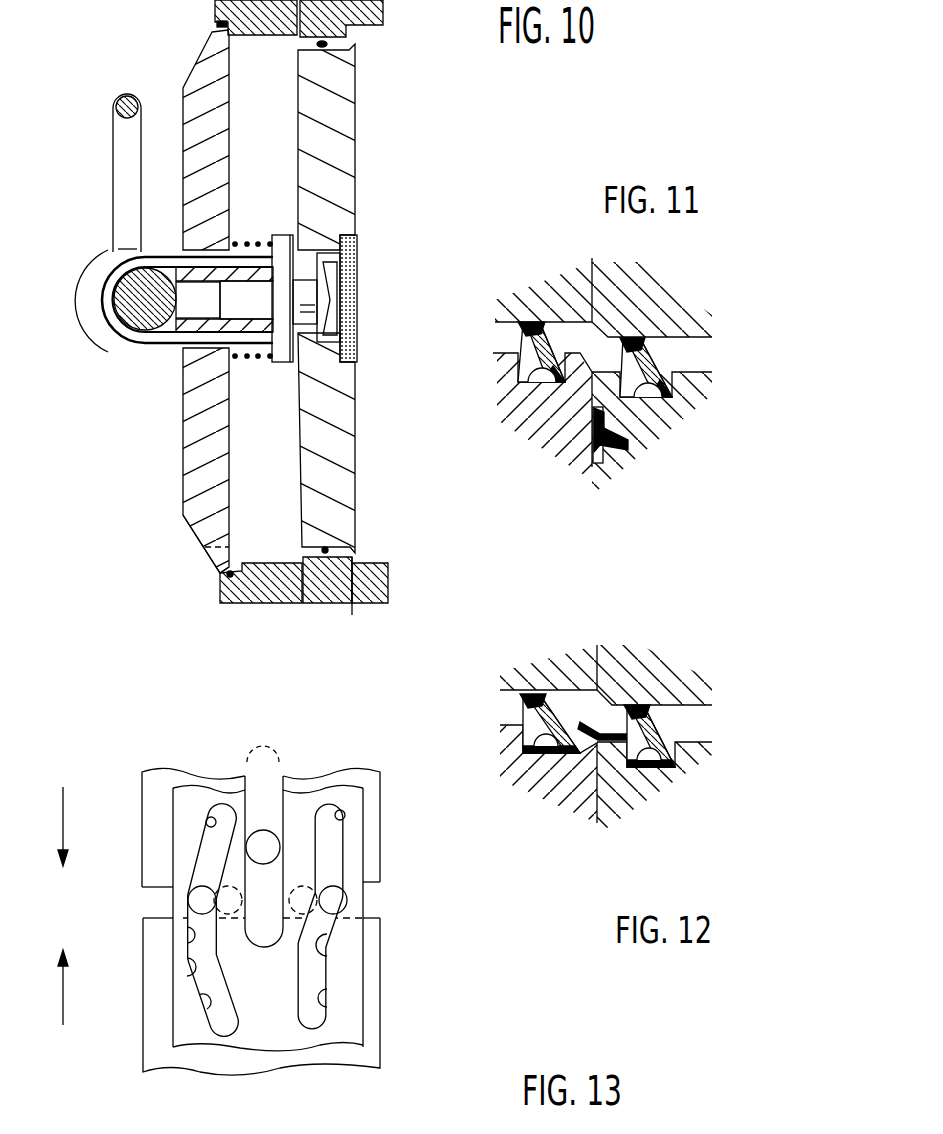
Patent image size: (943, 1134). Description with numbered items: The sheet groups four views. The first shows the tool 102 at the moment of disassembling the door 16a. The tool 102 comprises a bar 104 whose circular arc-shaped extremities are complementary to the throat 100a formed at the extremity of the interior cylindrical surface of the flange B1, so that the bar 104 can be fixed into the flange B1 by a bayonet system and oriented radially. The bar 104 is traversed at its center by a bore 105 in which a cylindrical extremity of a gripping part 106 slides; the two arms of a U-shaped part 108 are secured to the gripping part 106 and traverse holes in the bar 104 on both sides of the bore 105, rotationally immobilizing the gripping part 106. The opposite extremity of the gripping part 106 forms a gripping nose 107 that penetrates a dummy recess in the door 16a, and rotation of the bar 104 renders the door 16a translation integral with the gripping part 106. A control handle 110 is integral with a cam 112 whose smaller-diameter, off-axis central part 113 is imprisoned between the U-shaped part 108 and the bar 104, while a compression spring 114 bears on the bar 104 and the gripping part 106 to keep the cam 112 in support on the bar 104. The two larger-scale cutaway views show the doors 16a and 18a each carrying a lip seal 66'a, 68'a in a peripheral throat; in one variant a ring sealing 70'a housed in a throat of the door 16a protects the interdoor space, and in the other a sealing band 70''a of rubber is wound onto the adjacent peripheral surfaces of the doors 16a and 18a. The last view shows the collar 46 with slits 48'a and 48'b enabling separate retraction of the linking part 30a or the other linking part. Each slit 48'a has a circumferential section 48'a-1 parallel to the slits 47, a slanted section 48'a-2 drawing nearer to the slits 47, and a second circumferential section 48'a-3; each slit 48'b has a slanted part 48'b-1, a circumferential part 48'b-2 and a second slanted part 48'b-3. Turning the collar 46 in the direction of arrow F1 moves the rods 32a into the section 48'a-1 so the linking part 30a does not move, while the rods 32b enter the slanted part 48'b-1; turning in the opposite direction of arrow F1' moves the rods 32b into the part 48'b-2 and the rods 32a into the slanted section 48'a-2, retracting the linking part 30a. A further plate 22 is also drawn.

In FIG. 10, the flange B1 is at (213, 6).
In FIG. 11, the flange B1 is at (530, 289).
In FIG. 12, the flange B1 is at (529, 646).
In FIG. 10, the linking part 30a is at (347, 13).
In FIG. 11, the linking part 30a is at (737, 309).
In FIG. 12, the linking part 30a is at (722, 666).
In FIG. 10, the door 16a is at (342, 145).
In FIG. 11, the door 16a is at (727, 489).
In FIG. 12, the door 16a is at (724, 836).
In FIG. 11, the door 18a is at (562, 489).
In FIG. 12, the door 18a is at (562, 829).
In FIG. 10, the bar 104 is at (200, 407).
In FIG. 10, the gripping part 106 is at (213, 27).
In FIG. 10, the control handle 110 is at (118, 126).
In FIG. 10, the cam 112 is at (110, 250).
In FIG. 10, the central part of the cam 113 is at (121, 299).
In FIG. 10, the compression spring 114 is at (258, 242).
In FIG. 10, the gripping nose 107 is at (327, 292).
In FIG. 10, the U-shaped part 108 is at (127, 337).
In FIG. 10, the bore 105 is at (197, 312).
In FIG. 10, the tool 102 is at (163, 489).
In FIG. 10, the throat 100a is at (227, 567).
In FIG. 11, the lip seal 66'a is at (647, 326).
In FIG. 12, the lip seal 66'a is at (640, 792).
In FIG. 11, the lip seal 68'a is at (517, 379).
In FIG. 12, the lip seal 68'a is at (506, 720).
In FIG. 11, the ring sealing 70'a is at (657, 467).
In FIG. 12, the sealing band 70''a is at (605, 674).
In FIG. 13, the collar 46 is at (203, 797).
In FIG. 13, the slits 47 is at (277, 768).
In FIG. 13, the lower plate 22 is at (157, 968).
In FIG. 13, the slits 48'b is at (155, 931).
In FIG. 13, the slits 48'a is at (383, 916).
In FIG. 13, the rods 32b is at (194, 898).
In FIG. 13, the rods 32a is at (340, 905).
In FIG. 13, the slanted part 48'b-1 is at (149, 786).
In FIG. 13, the circumferential section 48'a-1 is at (382, 781).
In FIG. 13, the circumferential part 48'b-2 is at (135, 916).
In FIG. 13, the slanted part 48'b-3 is at (146, 1061).
In FIG. 13, the slanted section 48'a-2 is at (405, 979).
In FIG. 13, the circumferential section 48'a-3 is at (408, 1038).
In FIG. 13, the arrow F1 is at (54, 845).
In FIG. 13, the arrow F1' is at (57, 976).